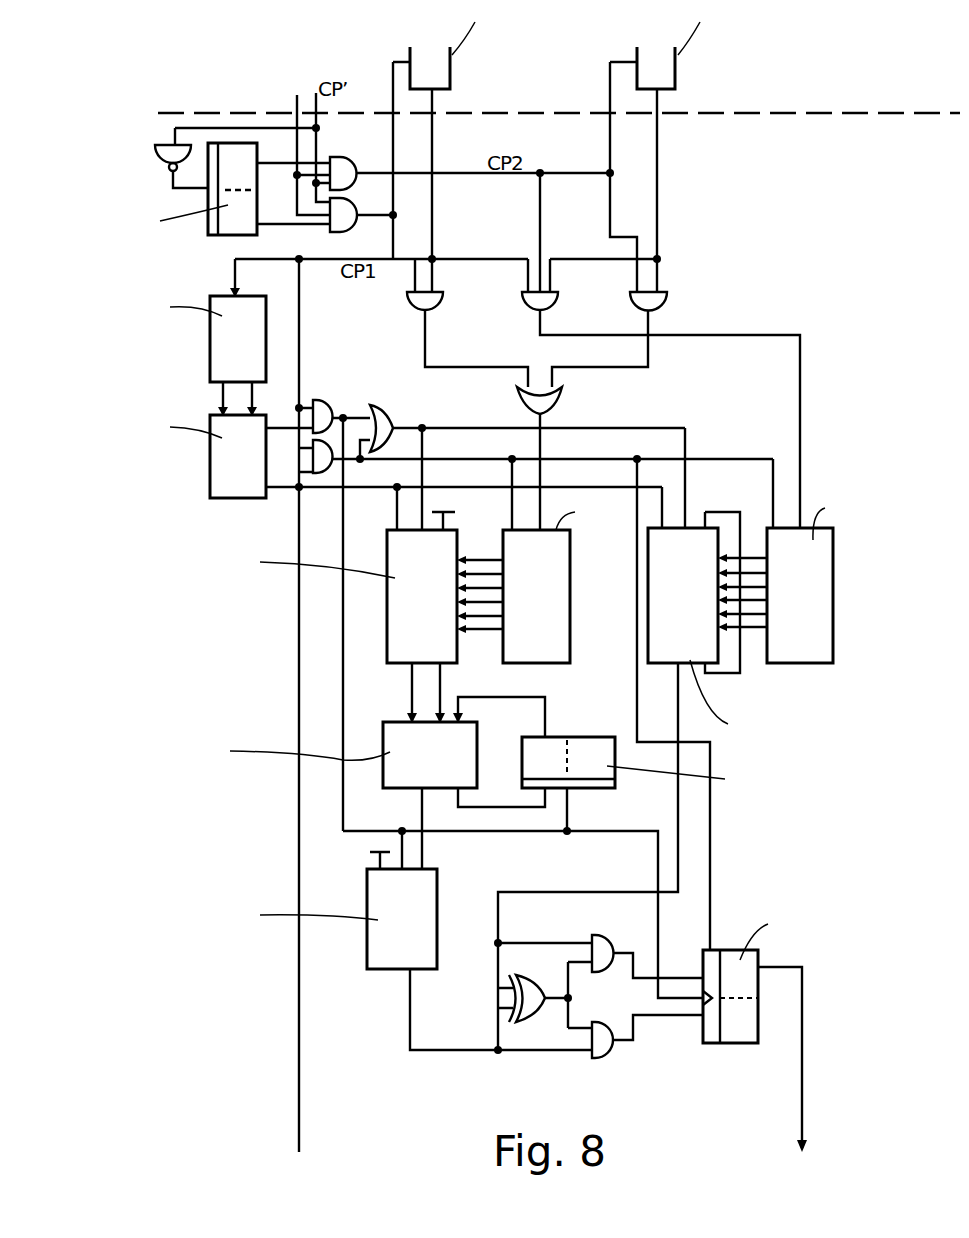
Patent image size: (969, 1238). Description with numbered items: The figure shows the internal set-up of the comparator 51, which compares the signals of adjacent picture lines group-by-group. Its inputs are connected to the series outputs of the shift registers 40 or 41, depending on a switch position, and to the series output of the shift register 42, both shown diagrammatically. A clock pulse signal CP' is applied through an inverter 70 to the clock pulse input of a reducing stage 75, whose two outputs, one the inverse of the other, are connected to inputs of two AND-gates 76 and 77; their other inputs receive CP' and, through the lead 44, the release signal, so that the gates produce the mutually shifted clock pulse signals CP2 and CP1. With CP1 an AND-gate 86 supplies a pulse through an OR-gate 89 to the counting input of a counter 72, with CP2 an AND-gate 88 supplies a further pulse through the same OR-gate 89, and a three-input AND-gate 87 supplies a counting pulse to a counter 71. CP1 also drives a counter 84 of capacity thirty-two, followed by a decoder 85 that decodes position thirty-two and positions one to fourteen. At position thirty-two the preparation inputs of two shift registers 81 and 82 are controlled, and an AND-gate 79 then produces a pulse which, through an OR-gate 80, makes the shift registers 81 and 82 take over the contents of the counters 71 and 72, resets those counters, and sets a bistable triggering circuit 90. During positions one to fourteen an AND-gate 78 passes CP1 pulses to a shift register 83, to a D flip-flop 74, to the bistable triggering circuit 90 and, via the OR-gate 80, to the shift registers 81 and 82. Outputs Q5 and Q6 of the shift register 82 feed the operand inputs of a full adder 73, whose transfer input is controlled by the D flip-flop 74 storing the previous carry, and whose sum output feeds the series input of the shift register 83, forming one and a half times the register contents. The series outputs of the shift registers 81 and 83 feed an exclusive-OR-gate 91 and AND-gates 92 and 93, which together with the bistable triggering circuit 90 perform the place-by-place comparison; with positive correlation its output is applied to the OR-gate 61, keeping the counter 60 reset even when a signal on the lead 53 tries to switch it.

The shift register 40 is at (692, 149).
The shift register 41 is at (678, 68).
The shift register 42 is at (453, 68).
The lead 44 is at (297, 104).
The comparator 51 is at (212, 693).
The lead 53 is at (302, 1130).
The counter 60 is at (302, 1139).
The OR-gate 61 is at (789, 1073).
The inverter 70 is at (163, 168).
The counter 71 is at (765, 645).
The counter 72 is at (572, 630).
The full adder 73 is at (384, 790).
The D flip-flop 74 is at (592, 790).
The reducing stage 75 is at (222, 240).
The AND-gate 76 is at (347, 162).
The AND-gate 77 is at (347, 231).
The AND-gate 78 is at (332, 402).
The AND-gate 79 is at (330, 480).
The OR-gate 80 is at (386, 418).
The shift register 81 is at (646, 648).
The shift register 82 is at (384, 648).
The shift register 83 is at (390, 970).
The counter 84 is at (210, 340).
The decoder 85 is at (210, 452).
The AND-gate 86 is at (445, 300).
The AND-gate 87 is at (560, 300).
The AND-gate 88 is at (669, 300).
The OR-gate 89 is at (560, 406).
The bistable triggering circuit 90 is at (742, 1045).
The exclusive-OR-gate 91 is at (530, 1022).
The AND-gate 92 is at (610, 944).
The AND-gate 93 is at (610, 1058).